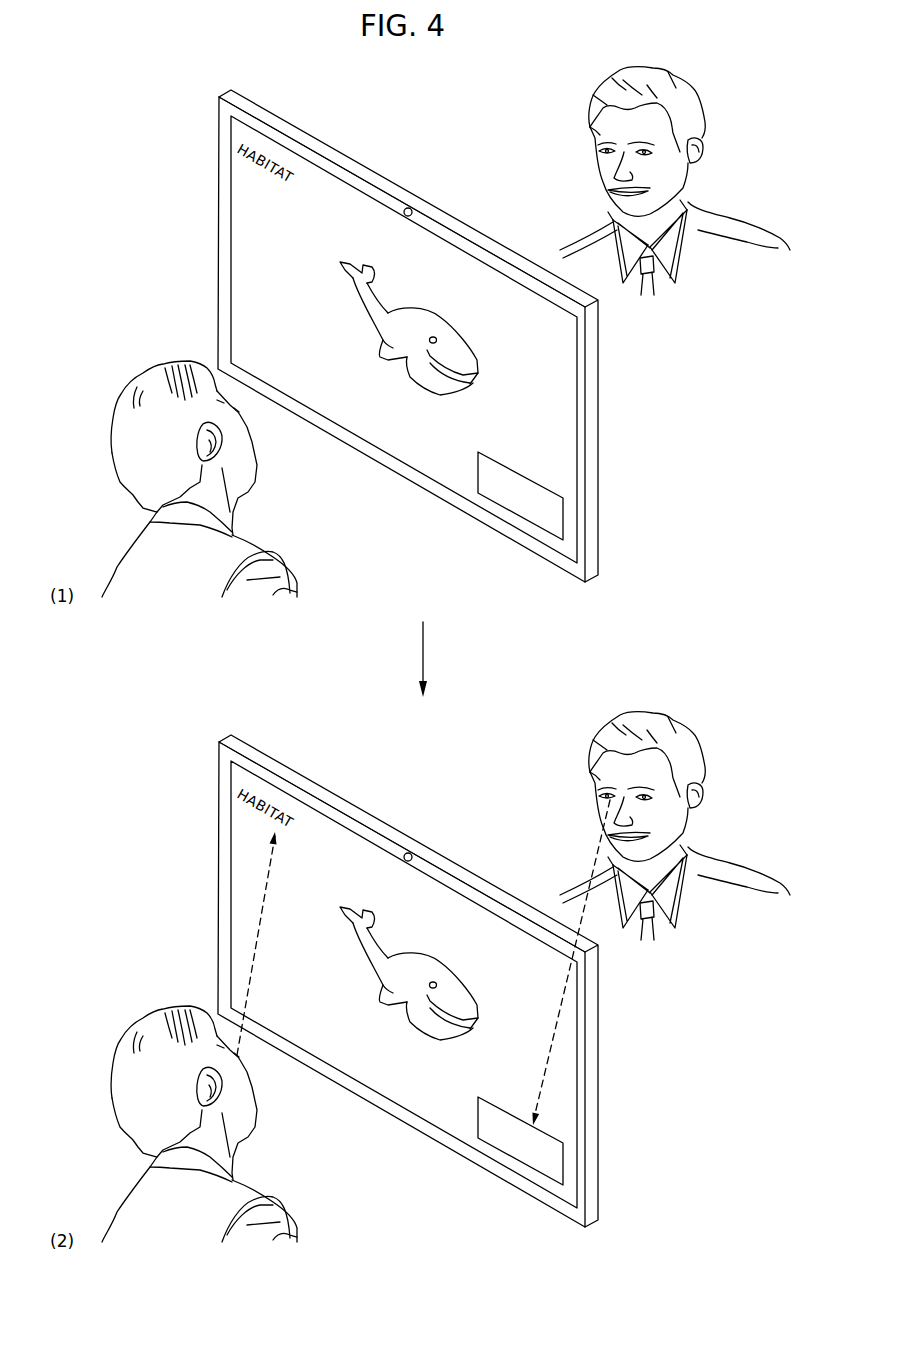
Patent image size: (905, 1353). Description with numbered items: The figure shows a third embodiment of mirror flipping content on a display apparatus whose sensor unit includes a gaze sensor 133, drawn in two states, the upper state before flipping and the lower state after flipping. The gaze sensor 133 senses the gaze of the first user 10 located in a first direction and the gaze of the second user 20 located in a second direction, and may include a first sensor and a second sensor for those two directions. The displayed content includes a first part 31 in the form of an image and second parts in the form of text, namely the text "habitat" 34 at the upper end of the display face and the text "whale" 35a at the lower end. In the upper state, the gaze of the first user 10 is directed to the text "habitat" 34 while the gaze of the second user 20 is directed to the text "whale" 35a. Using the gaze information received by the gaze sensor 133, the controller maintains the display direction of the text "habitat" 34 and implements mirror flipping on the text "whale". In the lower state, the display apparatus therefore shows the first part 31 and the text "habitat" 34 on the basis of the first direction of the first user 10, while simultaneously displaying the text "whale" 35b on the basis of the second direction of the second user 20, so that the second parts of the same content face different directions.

The first user 10 is at (130, 563).
The second user 20 is at (736, 222).
The first part 31 is at (447, 326).
The text "habitat" 34 is at (271, 156).
The text "whale" 35a is at (523, 510).
The text "whale" 35b is at (523, 1155).
The gaze sensor 133 is at (405, 210).